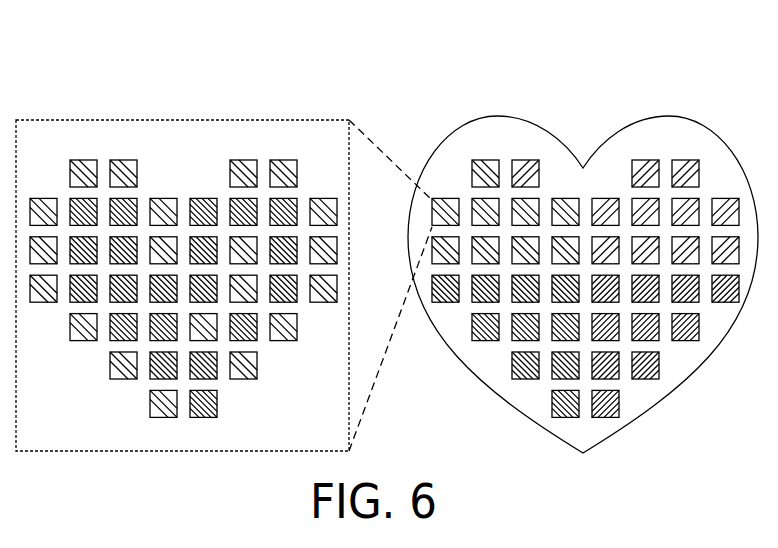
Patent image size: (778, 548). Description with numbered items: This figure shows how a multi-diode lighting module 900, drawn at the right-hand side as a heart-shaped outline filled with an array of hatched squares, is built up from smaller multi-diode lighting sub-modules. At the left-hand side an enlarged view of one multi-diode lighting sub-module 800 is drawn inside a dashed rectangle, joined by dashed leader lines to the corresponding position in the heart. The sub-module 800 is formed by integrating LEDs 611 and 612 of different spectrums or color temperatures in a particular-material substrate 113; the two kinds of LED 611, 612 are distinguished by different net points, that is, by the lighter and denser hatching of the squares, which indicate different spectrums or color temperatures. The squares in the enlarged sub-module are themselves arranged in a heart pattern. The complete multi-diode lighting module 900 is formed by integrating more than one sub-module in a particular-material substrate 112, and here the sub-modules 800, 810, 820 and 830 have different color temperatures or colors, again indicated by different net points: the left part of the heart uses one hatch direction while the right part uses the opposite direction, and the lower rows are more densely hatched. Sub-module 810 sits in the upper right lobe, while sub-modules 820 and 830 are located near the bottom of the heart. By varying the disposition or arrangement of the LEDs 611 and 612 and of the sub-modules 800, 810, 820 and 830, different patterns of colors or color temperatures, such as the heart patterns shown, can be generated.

The multi-diode lighting module 900 is at (587, 61).
The multi-diode lighting sub-module 800 is at (194, 61).
The particular-material substrate 113 is at (247, 137).
The LED 611 is at (87, 160).
The LED 612 is at (134, 199).
The multi-diode lighting sub-module 810 is at (640, 167).
The particular-material substrate 112 is at (693, 145).
The multi-diode lighting sub-module 820 is at (517, 379).
The multi-diode lighting sub-module 830 is at (647, 372).